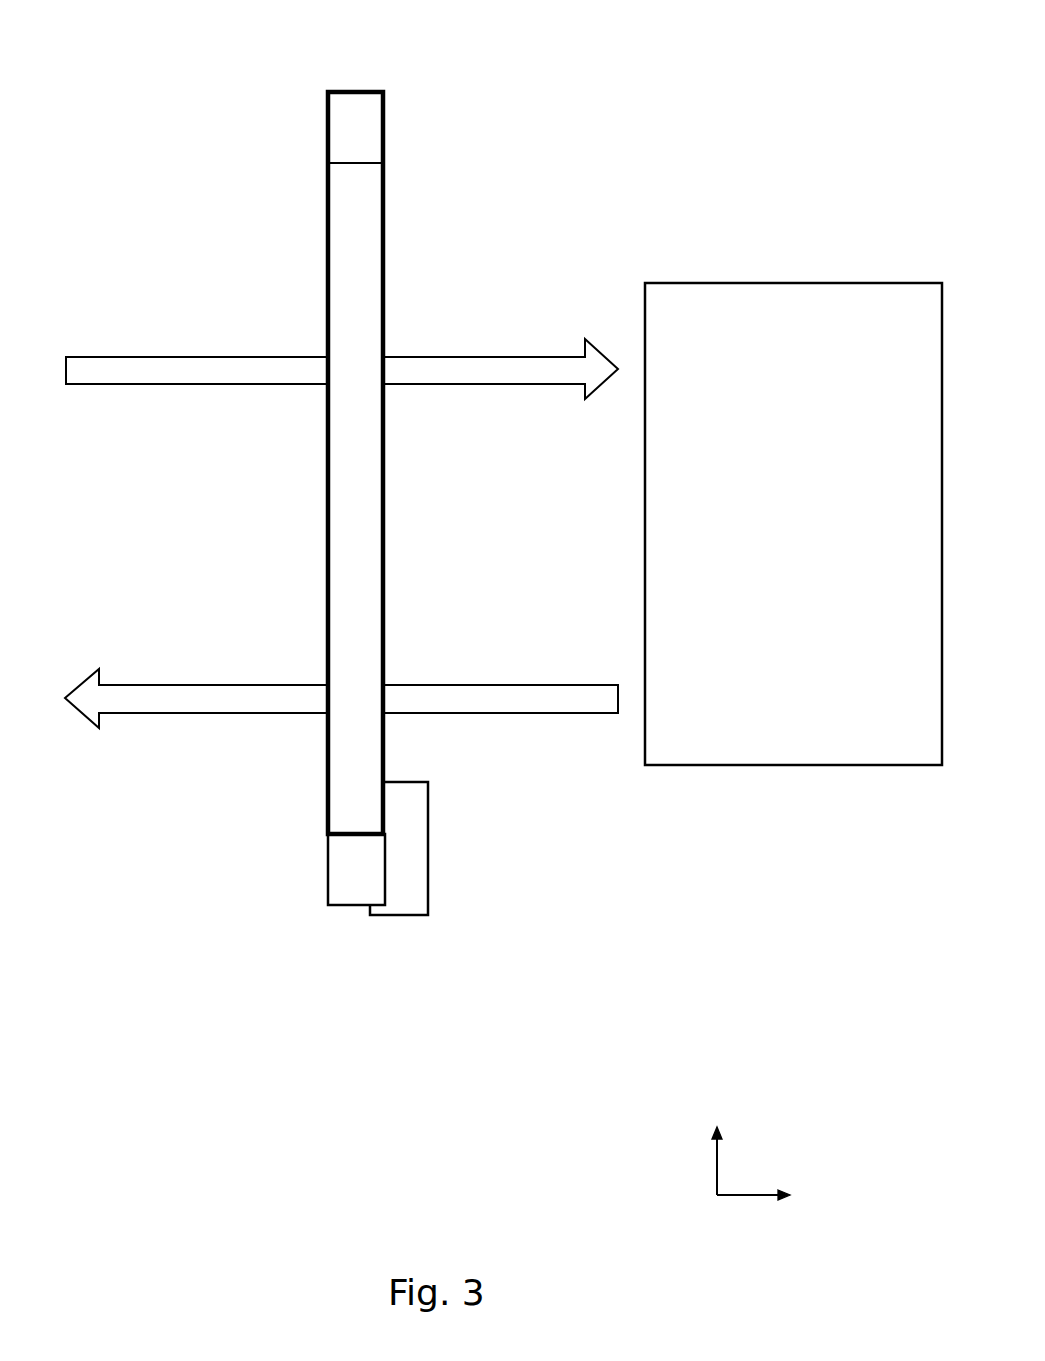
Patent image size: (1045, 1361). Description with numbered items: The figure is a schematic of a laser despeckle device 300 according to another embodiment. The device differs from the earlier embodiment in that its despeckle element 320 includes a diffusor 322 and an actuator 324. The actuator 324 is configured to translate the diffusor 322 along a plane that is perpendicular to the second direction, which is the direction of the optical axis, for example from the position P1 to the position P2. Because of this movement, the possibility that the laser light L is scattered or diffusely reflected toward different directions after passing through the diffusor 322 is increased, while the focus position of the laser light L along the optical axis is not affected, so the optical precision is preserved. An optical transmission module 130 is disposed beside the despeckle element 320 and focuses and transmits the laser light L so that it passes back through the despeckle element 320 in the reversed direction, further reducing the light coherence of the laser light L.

The laser despeckle device 300 is at (80, 30).
The optical transmission module 130 is at (799, 290).
The despeckle element 320 is at (344, 576).
The diffusor 322 is at (355, 893).
The actuator 324 is at (408, 893).
The position P1 is at (298, 878).
The position P2 is at (314, 822).
The laser light L is at (185, 360).